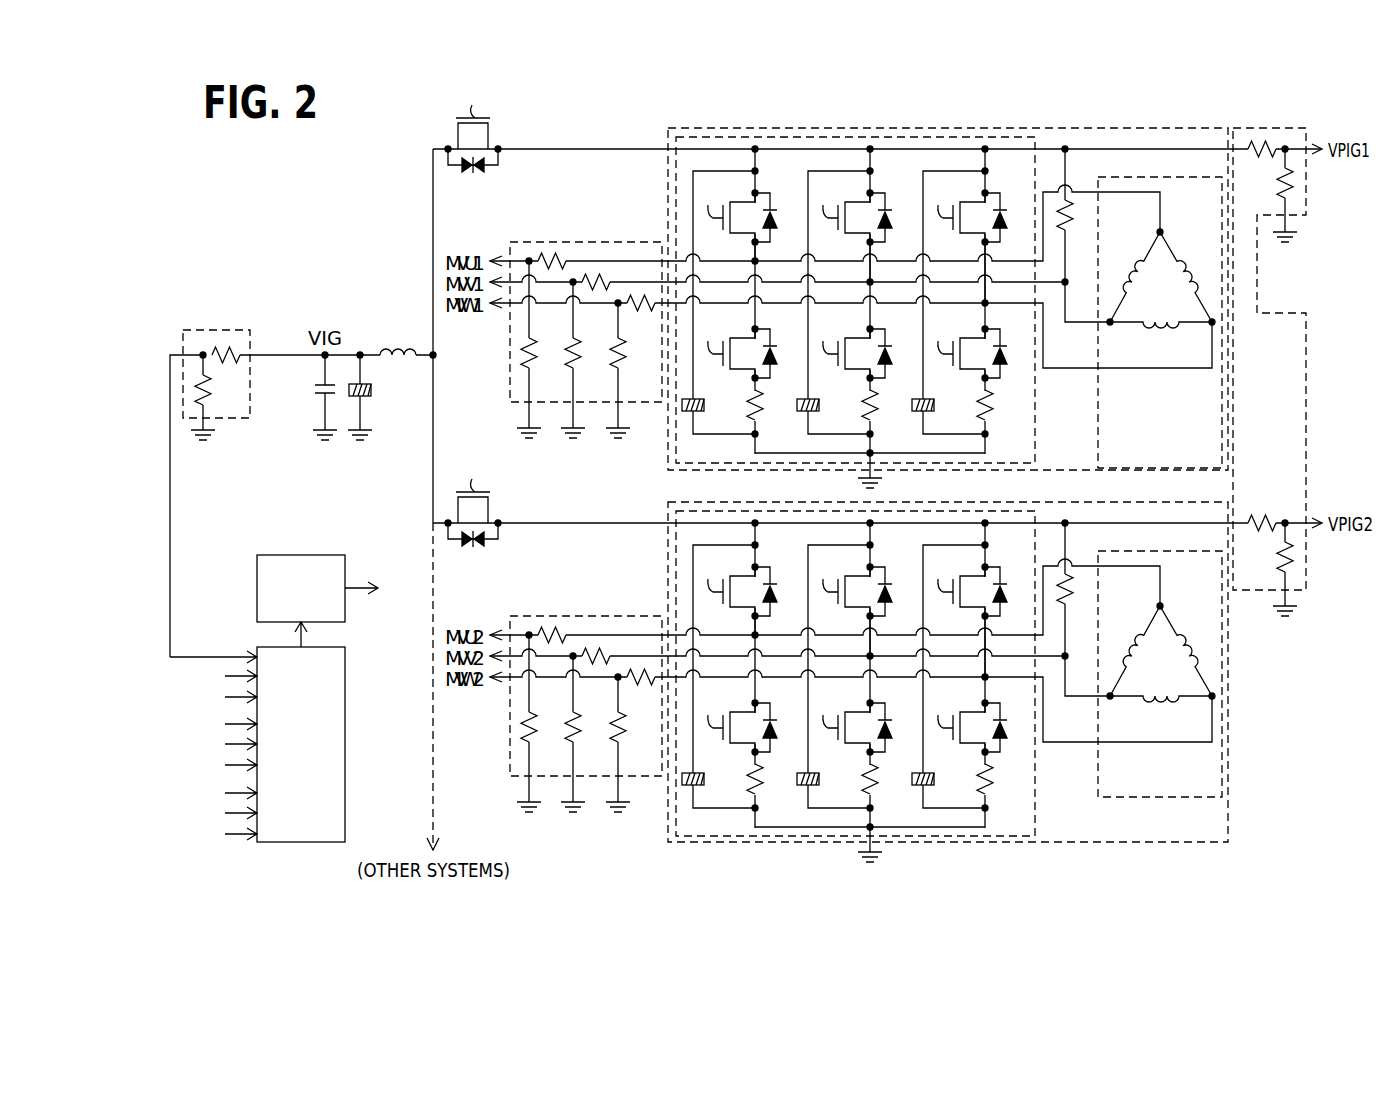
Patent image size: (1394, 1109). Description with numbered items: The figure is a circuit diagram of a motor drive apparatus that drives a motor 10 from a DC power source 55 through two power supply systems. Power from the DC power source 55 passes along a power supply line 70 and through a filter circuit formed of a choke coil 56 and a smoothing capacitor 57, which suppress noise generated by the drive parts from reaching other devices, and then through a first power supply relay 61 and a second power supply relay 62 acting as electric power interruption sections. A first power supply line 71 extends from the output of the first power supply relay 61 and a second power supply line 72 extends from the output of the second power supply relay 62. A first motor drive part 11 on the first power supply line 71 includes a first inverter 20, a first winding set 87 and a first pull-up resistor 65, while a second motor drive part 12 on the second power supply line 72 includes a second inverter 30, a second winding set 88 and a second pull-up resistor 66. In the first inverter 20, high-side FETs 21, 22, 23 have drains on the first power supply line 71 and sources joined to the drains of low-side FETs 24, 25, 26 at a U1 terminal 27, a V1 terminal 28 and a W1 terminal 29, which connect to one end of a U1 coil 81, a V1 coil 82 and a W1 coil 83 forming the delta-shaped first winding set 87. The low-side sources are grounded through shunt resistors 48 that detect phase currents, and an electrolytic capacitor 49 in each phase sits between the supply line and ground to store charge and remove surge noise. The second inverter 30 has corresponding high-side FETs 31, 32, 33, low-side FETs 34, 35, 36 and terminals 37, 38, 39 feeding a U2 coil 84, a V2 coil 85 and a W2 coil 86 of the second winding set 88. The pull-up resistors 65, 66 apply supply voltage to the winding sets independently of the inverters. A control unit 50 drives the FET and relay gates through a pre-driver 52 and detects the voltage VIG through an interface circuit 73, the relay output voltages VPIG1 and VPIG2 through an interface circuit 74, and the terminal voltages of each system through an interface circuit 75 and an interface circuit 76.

The motor 10 is at (1160, 690).
The first motor drive part 11 is at (668, 185).
The second motor drive part 12 is at (923, 672).
The first inverter 20 is at (1038, 397).
The high-side FET 21 is at (765, 227).
The high-side FET 22 is at (880, 227).
The high-side FET 23 is at (995, 227).
The low-side FET 24 is at (771, 342).
The low-side FET 25 is at (886, 342).
The low-side FET 26 is at (1001, 342).
The U1 terminal 27 is at (752, 263).
The V1 terminal 28 is at (867, 283).
The W1 terminal 29 is at (983, 304).
The second inverter 30 is at (882, 673).
The high-side FET 31 is at (753, 600).
The high-side FET 32 is at (868, 600).
The high-side FET 33 is at (983, 600).
The low-side FET 34 is at (752, 716).
The low-side FET 35 is at (867, 716).
The low-side FET 36 is at (982, 716).
The terminal 37 is at (733, 661).
The terminal 38 is at (848, 661).
The terminal 39 is at (963, 661).
The shunt resistor 48 is at (993, 786).
The electrolytic capacitor 49 is at (933, 778).
The control unit 50 is at (265, 847).
The pre-driver 52 is at (273, 552).
The DC power source 55 is at (320, 385).
The choke coil 56 is at (395, 350).
The smoothing capacitor 57 is at (368, 385).
The first power supply relay 61 is at (489, 137).
The second power supply relay 62 is at (479, 499).
The first pull-up resistor 65 is at (1070, 241).
The second pull-up resistor 66 is at (1077, 589).
The power supply line 70 is at (270, 352).
The first power supply line 71 is at (548, 147).
The second power supply line 72 is at (840, 499).
The interface circuit 73 is at (246, 420).
The interface circuit 74 is at (1248, 594).
The interface circuit 75 is at (583, 240).
The interface circuit 76 is at (586, 688).
The U1 coil 81 is at (1132, 266).
The V1 coil 82 is at (1148, 331).
The W1 coil 83 is at (1188, 266).
The U2 coil 84 is at (1133, 646).
The V2 coil 85 is at (1161, 719).
The W2 coil 86 is at (1188, 646).
The first winding set 87 is at (1160, 322).
The second winding set 88 is at (1161, 691).